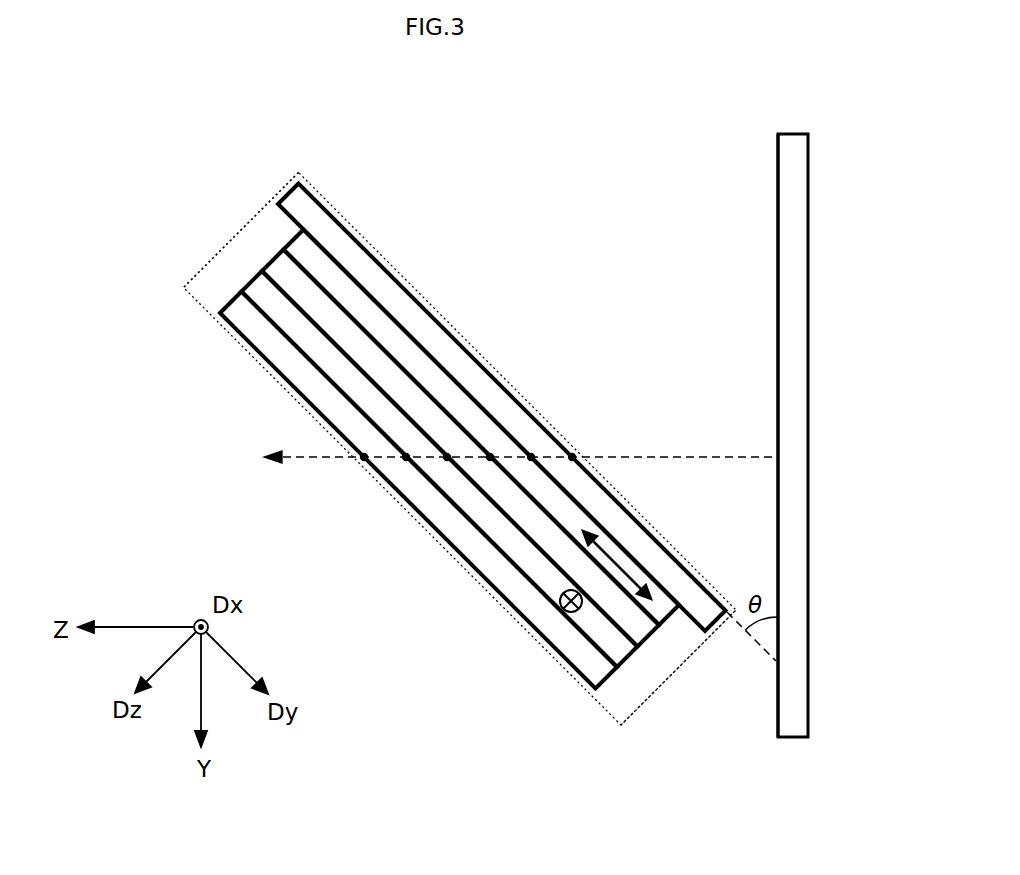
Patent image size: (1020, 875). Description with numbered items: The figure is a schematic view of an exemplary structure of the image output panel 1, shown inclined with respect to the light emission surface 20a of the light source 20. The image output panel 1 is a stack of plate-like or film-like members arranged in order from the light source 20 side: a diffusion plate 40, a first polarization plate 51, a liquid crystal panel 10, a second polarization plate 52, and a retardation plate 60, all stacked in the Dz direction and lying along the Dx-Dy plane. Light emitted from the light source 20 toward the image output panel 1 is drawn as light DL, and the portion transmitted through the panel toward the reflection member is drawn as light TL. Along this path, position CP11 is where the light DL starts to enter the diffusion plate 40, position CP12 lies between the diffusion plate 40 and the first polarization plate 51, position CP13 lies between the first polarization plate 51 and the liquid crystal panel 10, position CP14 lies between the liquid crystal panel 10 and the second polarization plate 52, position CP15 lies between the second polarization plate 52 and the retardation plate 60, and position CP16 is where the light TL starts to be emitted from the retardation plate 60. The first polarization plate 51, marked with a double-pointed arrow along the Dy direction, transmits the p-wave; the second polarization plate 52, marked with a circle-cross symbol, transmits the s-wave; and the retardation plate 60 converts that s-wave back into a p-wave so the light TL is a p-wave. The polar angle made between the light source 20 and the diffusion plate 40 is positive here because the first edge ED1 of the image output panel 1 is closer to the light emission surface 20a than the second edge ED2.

The image output panel 1 is at (200, 307).
The liquid crystal panel 10 is at (270, 262).
The light source 20 is at (798, 263).
The light emission surface 20a is at (778, 322).
The diffusion plate 40 is at (350, 233).
The first polarization plate 51 is at (292, 239).
The second polarization plate 52 is at (249, 283).
The retardation plate 60 is at (229, 304).
The position where light DL starts to enter the diffusion plate CP11 is at (572, 456).
The position between the diffusion plate and the first polarization plate CP12 is at (531, 456).
The position between the first polarization plate and the liquid crystal panel CP13 is at (490, 456).
The position between the liquid crystal panel and the second polarization plate CP14 is at (447, 458).
The position between the second polarization plate and the retardation plate CP15 is at (406, 458).
The position where light TL starts to be emitted from the retardation plate CP16 is at (364, 458).
The light DL is at (665, 457).
The light TL is at (307, 457).
The first edge ED1 is at (697, 696).
The second edge ED2 is at (262, 172).